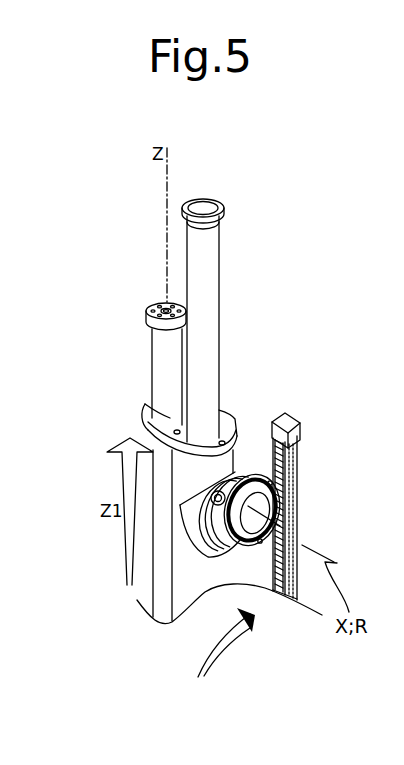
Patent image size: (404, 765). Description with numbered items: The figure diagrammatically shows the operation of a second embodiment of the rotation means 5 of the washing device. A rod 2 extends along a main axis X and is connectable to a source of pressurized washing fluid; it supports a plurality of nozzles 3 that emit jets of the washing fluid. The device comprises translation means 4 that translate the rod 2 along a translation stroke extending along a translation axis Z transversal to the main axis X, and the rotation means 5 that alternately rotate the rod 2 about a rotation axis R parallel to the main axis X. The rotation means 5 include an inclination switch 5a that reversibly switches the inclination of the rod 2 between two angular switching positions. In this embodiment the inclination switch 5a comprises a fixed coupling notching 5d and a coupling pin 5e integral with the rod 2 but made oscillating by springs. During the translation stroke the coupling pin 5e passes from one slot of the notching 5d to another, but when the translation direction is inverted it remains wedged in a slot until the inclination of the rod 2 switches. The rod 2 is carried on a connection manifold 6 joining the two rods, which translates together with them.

The rod 2 is at (252, 442).
The nozzles 3 is at (216, 504).
The translation means 4 is at (146, 280).
The rotation means 5 is at (288, 378).
The inclination switch 5a is at (327, 543).
The fixed coupling notching 5d is at (291, 488).
The coupling pin 5e is at (284, 523).
The connection manifold 6 is at (182, 570).